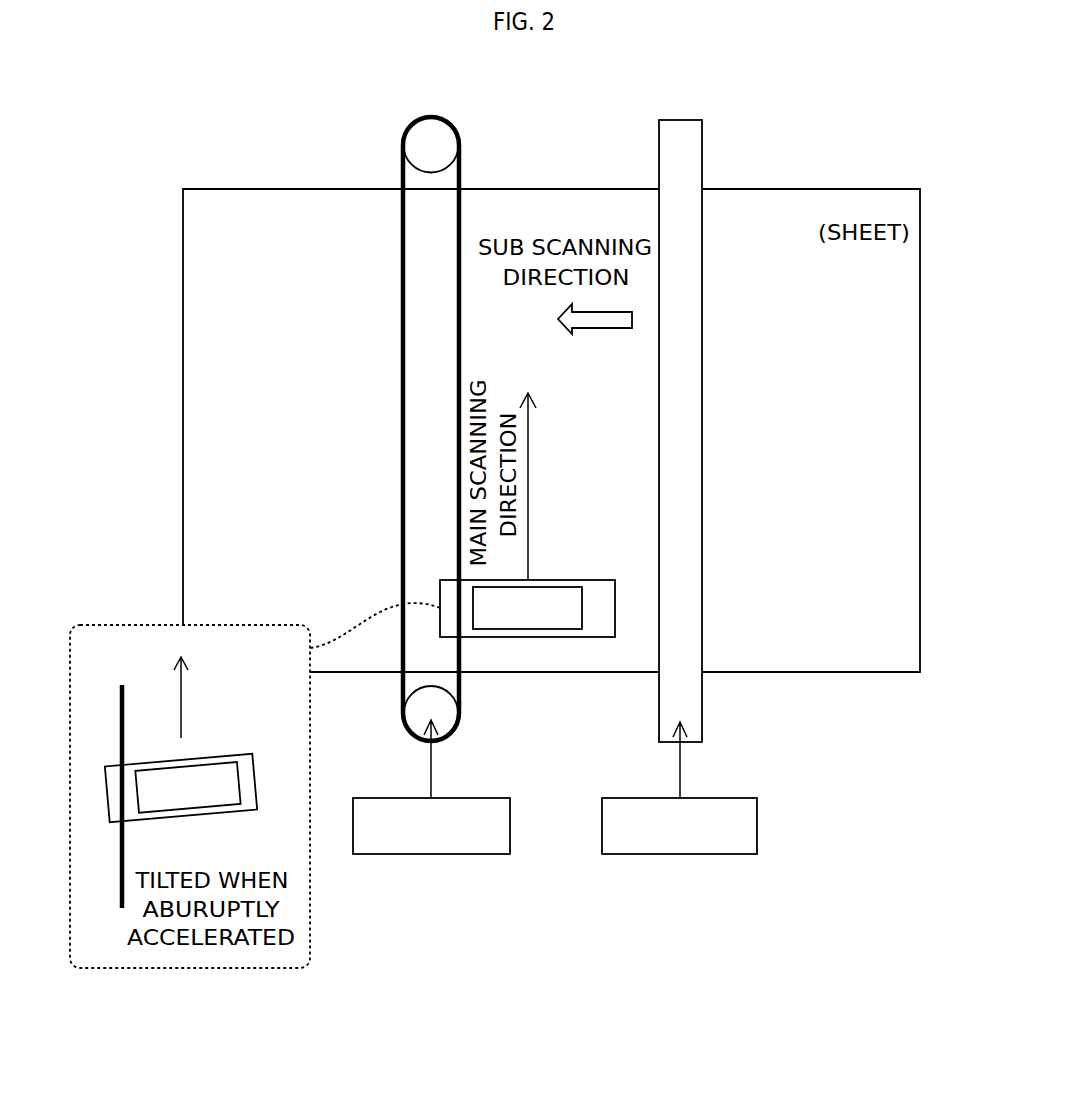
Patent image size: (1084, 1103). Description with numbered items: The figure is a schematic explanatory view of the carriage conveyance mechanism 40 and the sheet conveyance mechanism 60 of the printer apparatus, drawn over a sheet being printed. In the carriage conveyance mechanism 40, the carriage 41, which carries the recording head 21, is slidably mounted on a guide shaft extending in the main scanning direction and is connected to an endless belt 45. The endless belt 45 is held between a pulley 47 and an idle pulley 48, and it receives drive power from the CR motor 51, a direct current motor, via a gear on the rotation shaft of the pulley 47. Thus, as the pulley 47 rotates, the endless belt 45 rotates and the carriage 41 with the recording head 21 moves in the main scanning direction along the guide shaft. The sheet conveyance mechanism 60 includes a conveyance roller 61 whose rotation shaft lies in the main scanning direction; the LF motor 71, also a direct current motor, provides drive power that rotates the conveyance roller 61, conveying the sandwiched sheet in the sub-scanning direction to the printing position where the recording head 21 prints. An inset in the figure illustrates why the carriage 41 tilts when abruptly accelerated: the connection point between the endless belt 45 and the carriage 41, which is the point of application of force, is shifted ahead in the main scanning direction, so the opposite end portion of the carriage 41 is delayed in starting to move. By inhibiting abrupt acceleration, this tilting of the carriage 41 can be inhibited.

The recording head 21 is at (582, 618).
The carriage conveyance mechanism 40 is at (415, 429).
The carriage 41 is at (555, 580).
The endless belt 45 is at (460, 342).
The pulley 47 is at (430, 708).
The idle pulley 48 is at (430, 146).
The CR motor 51 is at (510, 820).
The sheet conveyance mechanism 60 is at (743, 432).
The conveyance roller 61 is at (702, 722).
The LF motor 71 is at (757, 820).